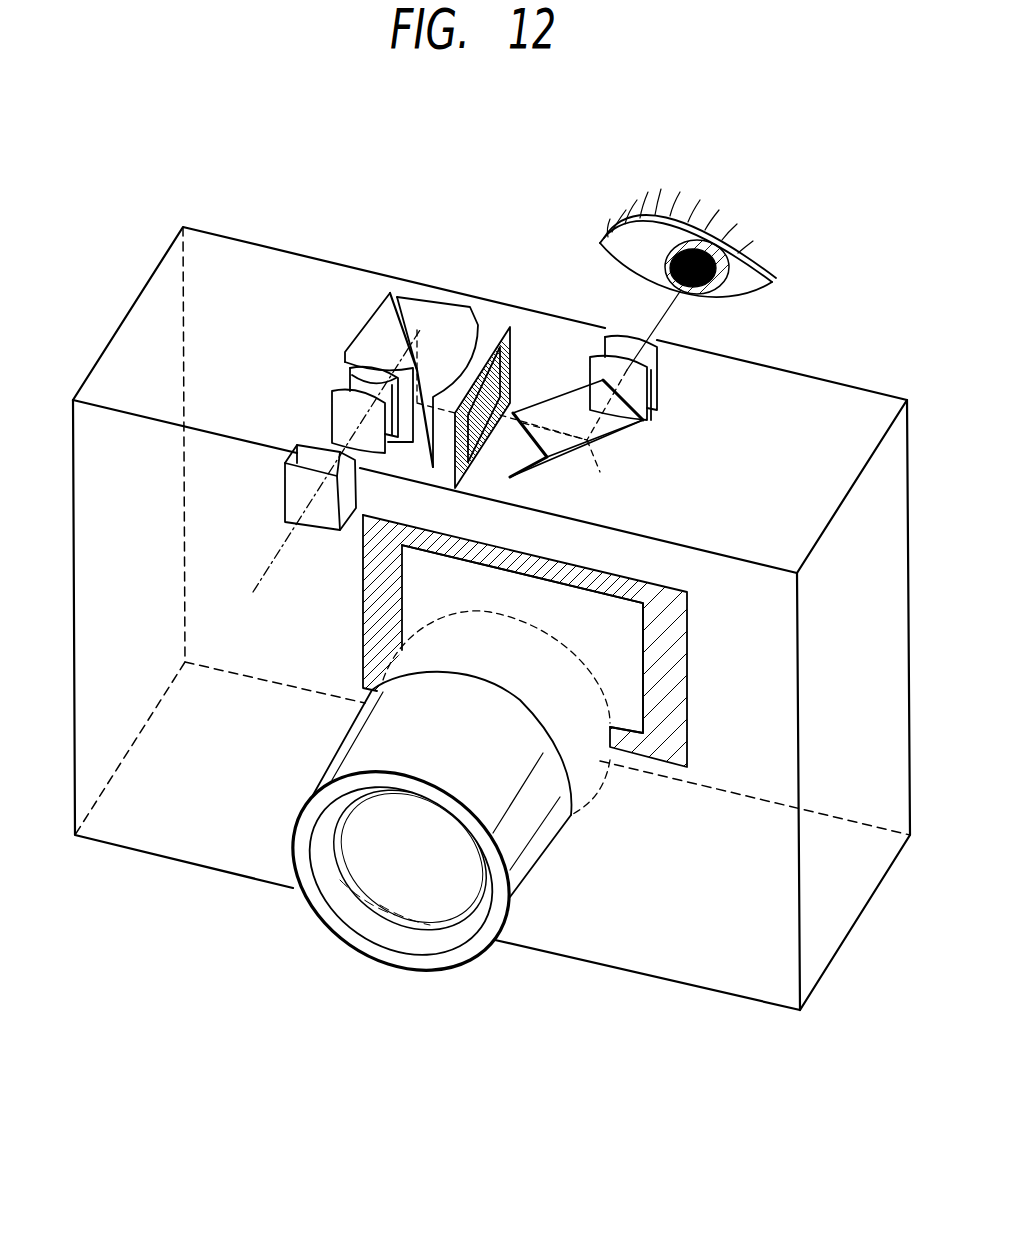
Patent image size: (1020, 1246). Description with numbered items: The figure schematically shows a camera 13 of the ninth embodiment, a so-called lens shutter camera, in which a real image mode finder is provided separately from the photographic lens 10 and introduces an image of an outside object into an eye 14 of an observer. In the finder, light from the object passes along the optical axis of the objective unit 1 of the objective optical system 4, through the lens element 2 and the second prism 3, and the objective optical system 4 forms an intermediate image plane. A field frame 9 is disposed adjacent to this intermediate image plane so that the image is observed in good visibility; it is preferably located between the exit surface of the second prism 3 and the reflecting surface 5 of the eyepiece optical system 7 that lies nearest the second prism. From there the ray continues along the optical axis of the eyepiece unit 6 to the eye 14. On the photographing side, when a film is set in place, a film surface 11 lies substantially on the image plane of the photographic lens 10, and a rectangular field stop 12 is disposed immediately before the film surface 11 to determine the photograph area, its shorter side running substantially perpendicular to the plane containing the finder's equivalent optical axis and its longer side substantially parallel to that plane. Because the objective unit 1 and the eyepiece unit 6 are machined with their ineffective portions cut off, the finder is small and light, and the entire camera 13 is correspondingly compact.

The objective unit 1 is at (262, 487).
The second lens of objective 2 is at (290, 398).
The second prism 3 is at (422, 302).
The objective optical system 4 is at (267, 200).
The reflecting surface 5 is at (560, 393).
The eyepiece unit 6 is at (590, 356).
The eyepiece optical system 7 is at (557, 192).
The field frame 9 is at (500, 333).
The photographic lens 10 is at (423, 925).
The film surface 11 is at (628, 722).
The field stop 12 is at (668, 745).
The camera 13 is at (820, 370).
The eye 14 is at (750, 277).